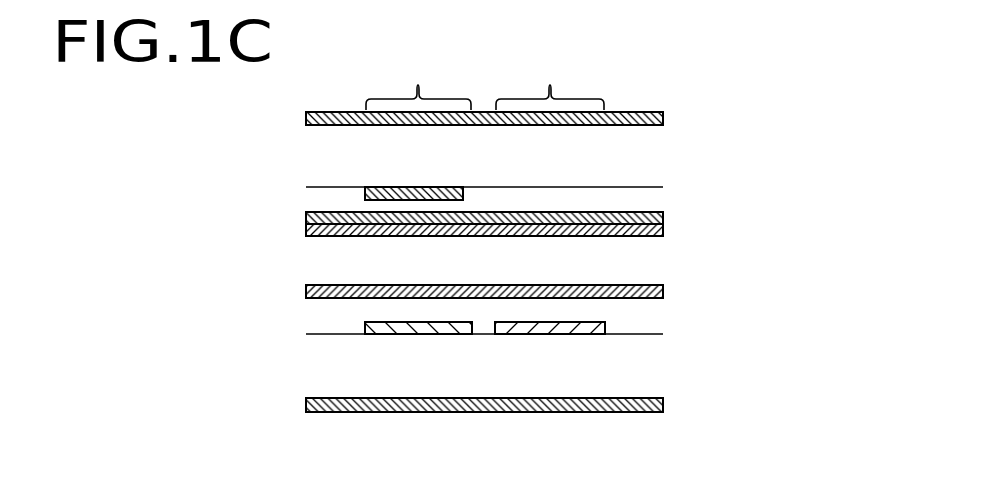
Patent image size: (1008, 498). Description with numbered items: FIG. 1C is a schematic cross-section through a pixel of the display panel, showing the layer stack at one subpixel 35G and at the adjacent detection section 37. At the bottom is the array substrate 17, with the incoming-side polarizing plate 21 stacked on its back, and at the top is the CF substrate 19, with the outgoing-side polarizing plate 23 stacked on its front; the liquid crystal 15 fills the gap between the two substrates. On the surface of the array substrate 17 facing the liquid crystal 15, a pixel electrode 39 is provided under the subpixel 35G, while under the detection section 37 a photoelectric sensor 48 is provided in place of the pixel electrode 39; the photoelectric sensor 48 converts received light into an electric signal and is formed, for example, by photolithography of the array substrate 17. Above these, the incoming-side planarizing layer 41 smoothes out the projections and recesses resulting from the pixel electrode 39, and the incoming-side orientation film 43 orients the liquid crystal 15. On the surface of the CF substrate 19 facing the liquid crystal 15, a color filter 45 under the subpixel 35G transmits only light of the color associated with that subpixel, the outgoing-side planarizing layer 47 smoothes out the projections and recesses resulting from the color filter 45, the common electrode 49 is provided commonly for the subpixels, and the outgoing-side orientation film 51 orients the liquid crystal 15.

The liquid crystal 15 is at (655, 258).
The array substrate 17 is at (510, 383).
The CF substrate 19 is at (655, 159).
The incoming-side polarizing plate 21 is at (615, 412).
The outgoing-side polarizing plate 23 is at (663, 118).
The subpixel 35G is at (420, 70).
The detection section 37 is at (550, 83).
The pixel electrode 39 is at (420, 337).
The incoming-side planarizing layer 41 is at (318, 321).
The incoming-side orientation film 43 is at (308, 292).
The color filter 45 is at (387, 187).
The outgoing-side planarizing layer 47 is at (315, 200).
The photoelectric sensor 48 is at (553, 337).
The common electrode 49 is at (309, 218).
The outgoing-side orientation film 51 is at (308, 232).